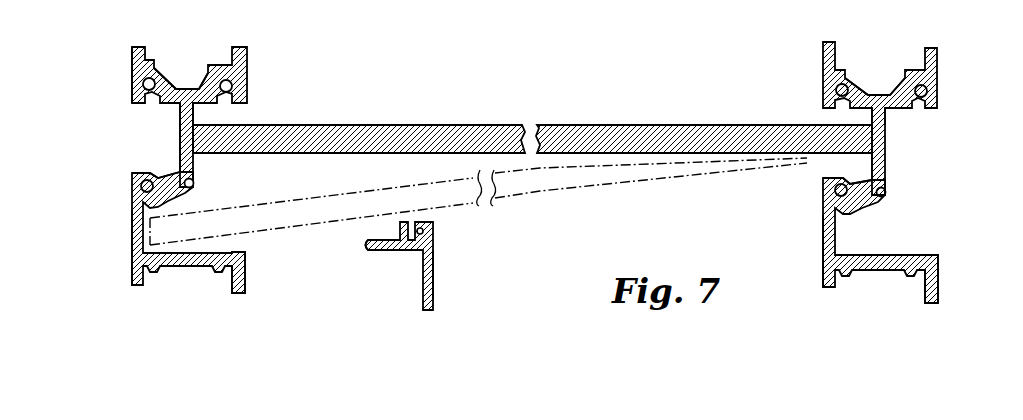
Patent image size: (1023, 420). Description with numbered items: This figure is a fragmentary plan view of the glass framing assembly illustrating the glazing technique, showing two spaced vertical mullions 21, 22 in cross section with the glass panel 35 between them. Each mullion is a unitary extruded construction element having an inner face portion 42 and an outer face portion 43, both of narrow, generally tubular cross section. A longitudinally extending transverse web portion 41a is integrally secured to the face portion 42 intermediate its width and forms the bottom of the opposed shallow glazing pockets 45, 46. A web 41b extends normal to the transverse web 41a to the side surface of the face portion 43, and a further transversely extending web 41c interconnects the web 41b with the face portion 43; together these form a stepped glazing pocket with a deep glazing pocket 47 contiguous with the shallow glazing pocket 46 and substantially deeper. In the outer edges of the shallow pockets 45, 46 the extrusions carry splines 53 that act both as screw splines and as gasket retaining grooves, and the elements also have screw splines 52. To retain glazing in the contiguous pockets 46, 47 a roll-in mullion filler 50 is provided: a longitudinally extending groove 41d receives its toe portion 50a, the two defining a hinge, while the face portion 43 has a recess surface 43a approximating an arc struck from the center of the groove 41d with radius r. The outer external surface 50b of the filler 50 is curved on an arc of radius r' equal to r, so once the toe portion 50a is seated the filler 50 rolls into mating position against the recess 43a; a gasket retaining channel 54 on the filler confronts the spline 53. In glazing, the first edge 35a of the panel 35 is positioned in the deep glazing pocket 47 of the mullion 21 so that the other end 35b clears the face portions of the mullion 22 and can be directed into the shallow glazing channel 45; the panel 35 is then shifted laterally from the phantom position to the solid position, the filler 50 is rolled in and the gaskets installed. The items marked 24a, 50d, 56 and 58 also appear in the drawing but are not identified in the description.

The vertical mullion 21 is at (130, 62).
The vertical mullion 22 is at (975, 289).
The panel flange 24a is at (306, 7).
The glazing panel 35 is at (602, 112).
The first edge of glass panel 35a is at (183, 141).
The other end of glass panel 35b is at (805, 163).
The transverse web portion 41a is at (179, 131).
The longitudinally extending web 41b is at (165, 176).
The transversely extending web 41c is at (134, 203).
The longitudinally extending groove 41d is at (184, 176).
The inner face portion 42 is at (154, 62).
The outer face portion 43 is at (134, 287).
The recess surface 43a is at (231, 268).
The shallow glazing pocket 45 is at (155, 108).
The shallow glazing pocket 46 is at (218, 108).
The deep glazing pocket 47 is at (143, 250).
The mullion filler 50 is at (437, 258).
The toe portion 50a is at (368, 241).
The outer external surface 50b is at (428, 305).
The retainer vertical leg 50d is at (436, 272).
The screw splines 52 is at (730, 7).
The splines 53 is at (142, 84).
The gasket retaining channel 54 is at (428, 236).
The rail 56 is at (57, 7).
The rail 58 is at (423, 7).
The radius r is at (197, 224).
The radius r' is at (398, 278).